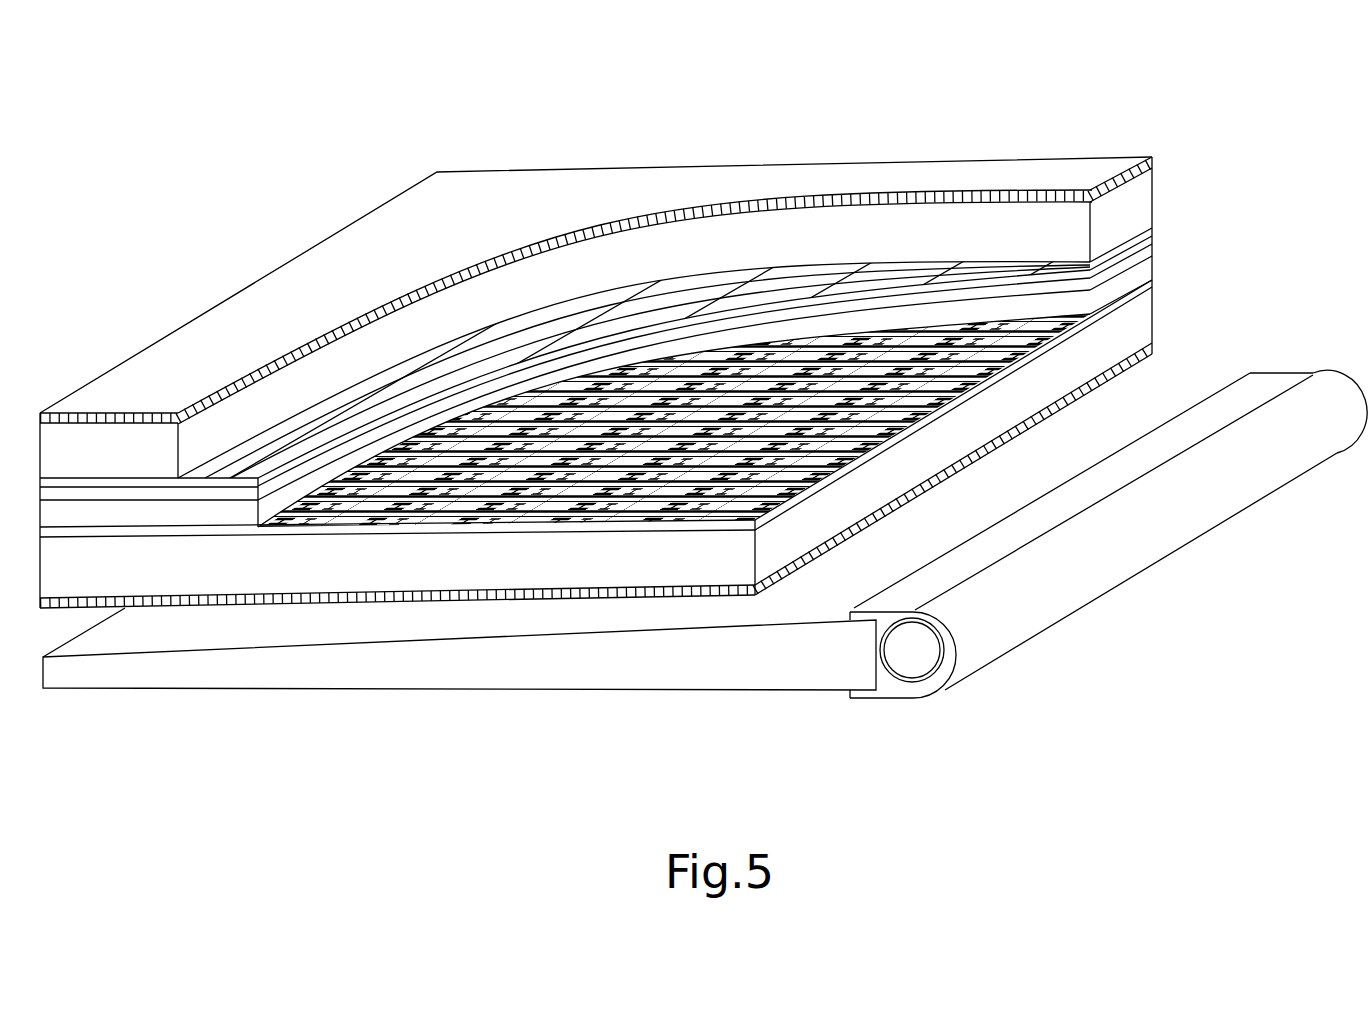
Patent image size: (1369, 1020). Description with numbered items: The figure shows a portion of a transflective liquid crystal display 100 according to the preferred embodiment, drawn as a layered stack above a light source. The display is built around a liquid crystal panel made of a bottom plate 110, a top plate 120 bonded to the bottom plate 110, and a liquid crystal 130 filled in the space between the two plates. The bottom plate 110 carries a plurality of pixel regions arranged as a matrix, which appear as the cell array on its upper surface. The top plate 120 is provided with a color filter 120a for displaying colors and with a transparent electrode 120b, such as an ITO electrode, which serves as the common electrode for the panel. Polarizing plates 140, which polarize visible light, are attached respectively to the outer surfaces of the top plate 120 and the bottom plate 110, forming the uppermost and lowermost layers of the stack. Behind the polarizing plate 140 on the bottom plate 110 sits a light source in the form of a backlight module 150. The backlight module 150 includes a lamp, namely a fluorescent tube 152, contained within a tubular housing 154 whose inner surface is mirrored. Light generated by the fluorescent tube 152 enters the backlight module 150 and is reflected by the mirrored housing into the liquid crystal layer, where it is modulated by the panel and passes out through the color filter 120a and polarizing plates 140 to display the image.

The display device 100 is at (156, 163).
The bottom plate 110 is at (1117, 333).
The top plate 120 is at (704, 356).
The color filter 120a is at (1145, 205).
The transparent electrode 120b is at (1145, 260).
The liquid crystal 130 is at (1145, 288).
The polarizing plates 140 is at (1153, 163).
The backlight module 150 is at (1146, 578).
The fluorescent tube 152 is at (912, 660).
The tubular housing 154 is at (975, 650).